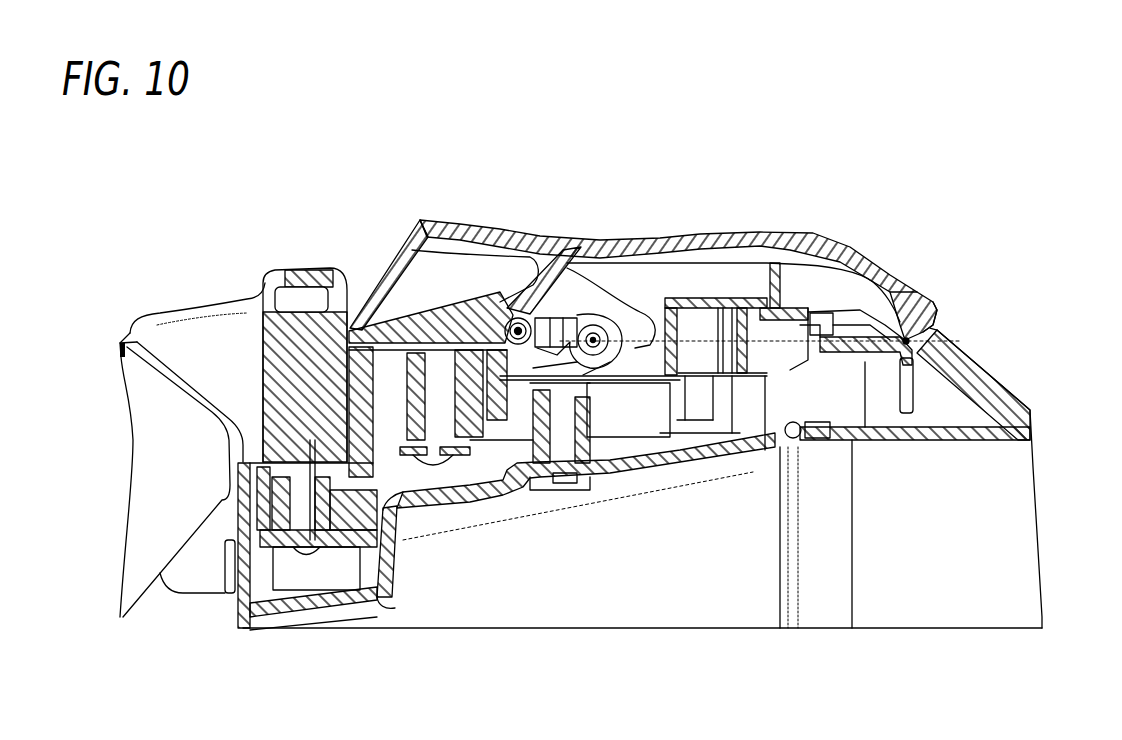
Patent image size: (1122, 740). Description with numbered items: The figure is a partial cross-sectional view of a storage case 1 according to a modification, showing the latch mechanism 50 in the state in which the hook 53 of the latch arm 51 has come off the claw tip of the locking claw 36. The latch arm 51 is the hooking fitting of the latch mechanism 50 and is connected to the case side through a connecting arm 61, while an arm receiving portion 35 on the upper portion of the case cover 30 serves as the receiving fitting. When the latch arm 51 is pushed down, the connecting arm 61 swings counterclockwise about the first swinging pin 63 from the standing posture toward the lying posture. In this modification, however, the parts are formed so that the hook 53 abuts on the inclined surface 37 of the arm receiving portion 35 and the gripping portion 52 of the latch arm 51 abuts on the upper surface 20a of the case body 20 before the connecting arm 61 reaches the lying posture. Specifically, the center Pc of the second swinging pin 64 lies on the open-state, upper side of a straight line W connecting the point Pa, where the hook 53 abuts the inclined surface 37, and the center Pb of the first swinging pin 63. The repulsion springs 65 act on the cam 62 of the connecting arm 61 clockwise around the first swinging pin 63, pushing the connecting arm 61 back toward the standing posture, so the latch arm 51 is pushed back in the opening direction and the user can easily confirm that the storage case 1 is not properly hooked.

The storage case 1 is at (1040, 283).
The case body 20 is at (338, 214).
The upper surface of the case body 20a is at (345, 300).
The case cover 30 is at (1030, 355).
The arm receiving portion 35 is at (857, 330).
The locking claw 36 is at (925, 356).
The inclined surface 37 is at (895, 315).
The latch mechanism 50 is at (674, 178).
The latch arm 51 is at (730, 228).
The gripping portion 52 is at (410, 310).
The hook 53 is at (936, 313).
The connecting arm 61 is at (562, 262).
The cam 62 is at (612, 362).
The first swinging pin 63 is at (605, 315).
The second swinging pin 64 is at (480, 310).
The repulsion springs 65 is at (623, 477).
The abutment point Pa is at (910, 341).
The center of the first swinging pin Pb is at (603, 328).
The center of the second swinging pin Pc is at (512, 318).
The straight line W is at (697, 333).